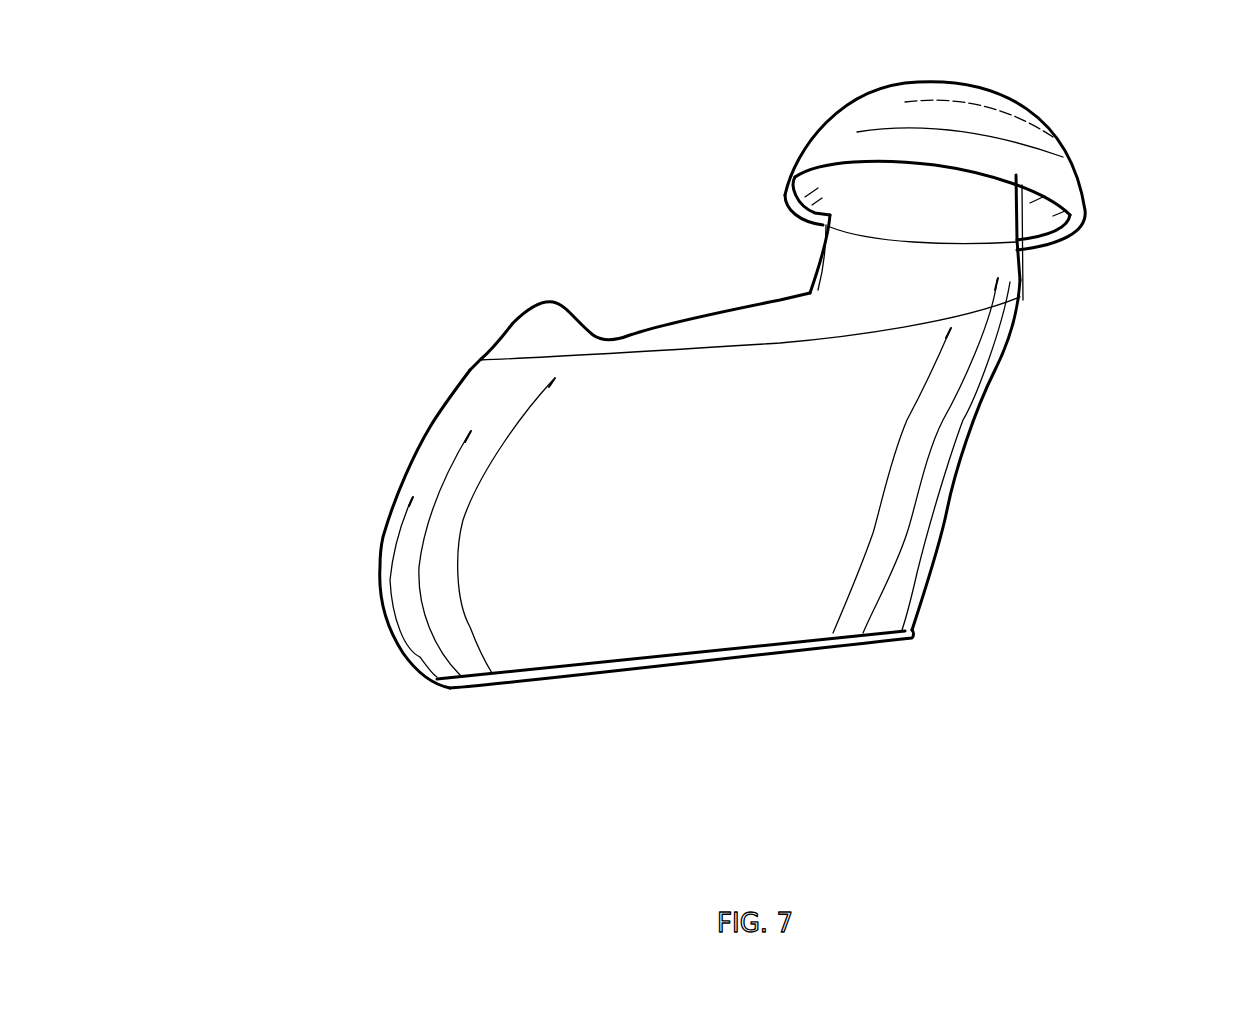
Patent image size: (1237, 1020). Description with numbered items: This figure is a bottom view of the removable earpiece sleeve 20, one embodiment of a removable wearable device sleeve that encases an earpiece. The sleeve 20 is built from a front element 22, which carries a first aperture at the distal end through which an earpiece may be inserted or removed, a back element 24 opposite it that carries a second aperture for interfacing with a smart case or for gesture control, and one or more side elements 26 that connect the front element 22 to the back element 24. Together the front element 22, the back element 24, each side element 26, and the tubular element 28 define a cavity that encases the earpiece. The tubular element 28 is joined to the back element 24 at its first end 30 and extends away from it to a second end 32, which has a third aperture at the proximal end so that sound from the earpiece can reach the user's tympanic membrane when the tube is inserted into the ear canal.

The removable earpiece sleeve 20 is at (318, 188).
The front element 22 is at (667, 658).
The back element 24 is at (537, 333).
The side element 26 is at (412, 521).
The tubular element 28 is at (990, 215).
The first end 30 is at (820, 223).
The second end 32 is at (1033, 148).